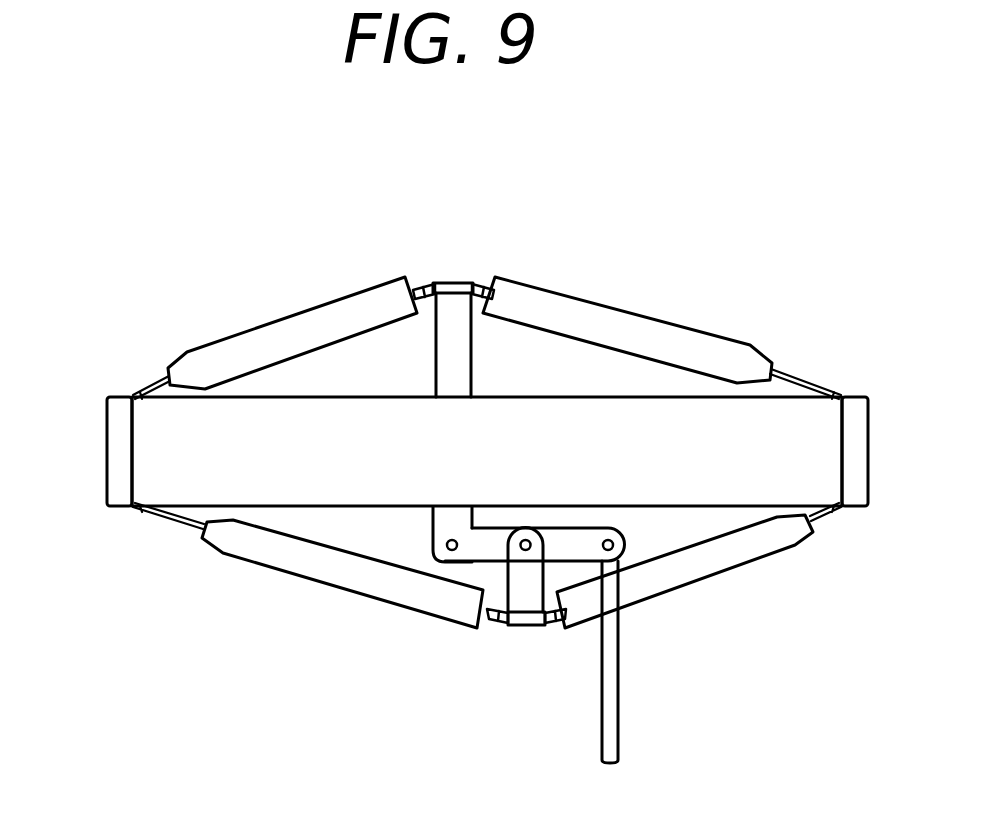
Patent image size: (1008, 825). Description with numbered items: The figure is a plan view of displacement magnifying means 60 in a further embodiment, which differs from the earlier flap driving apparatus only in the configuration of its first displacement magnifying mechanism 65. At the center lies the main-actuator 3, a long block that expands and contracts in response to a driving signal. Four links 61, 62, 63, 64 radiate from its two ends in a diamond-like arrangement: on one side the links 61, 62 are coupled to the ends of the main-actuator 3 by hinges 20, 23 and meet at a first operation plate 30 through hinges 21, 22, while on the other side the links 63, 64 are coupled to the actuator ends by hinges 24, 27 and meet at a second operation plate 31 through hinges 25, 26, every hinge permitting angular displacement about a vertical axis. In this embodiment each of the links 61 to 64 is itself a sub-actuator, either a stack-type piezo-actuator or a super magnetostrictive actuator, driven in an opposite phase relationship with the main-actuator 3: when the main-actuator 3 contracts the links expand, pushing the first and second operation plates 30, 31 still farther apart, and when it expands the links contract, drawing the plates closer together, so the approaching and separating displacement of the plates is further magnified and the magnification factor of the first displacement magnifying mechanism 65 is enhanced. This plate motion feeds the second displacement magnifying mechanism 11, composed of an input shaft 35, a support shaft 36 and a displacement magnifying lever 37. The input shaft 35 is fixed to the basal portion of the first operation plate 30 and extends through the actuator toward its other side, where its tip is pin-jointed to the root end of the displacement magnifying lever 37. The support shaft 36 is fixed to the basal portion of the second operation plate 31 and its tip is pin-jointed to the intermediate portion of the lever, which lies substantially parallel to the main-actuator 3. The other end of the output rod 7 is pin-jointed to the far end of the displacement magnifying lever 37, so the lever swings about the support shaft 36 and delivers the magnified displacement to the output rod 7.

The actuator 3 is at (783, 432).
The output rod 7 is at (613, 728).
The second displacement magnifying mechanism 11 is at (503, 573).
The hinge 20 is at (130, 395).
The hinge 21 is at (422, 283).
The hinge 22 is at (478, 283).
The hinge 23 is at (842, 392).
The hinge 24 is at (128, 508).
The hinge 25 is at (497, 628).
The hinge 26 is at (545, 626).
The hinge 27 is at (845, 513).
The first operation plate 30 is at (457, 283).
The second operation plate 31 is at (522, 625).
The input shaft 35 is at (452, 360).
The support shaft 36 is at (535, 590).
The displacement magnifying lever 37 is at (565, 540).
The displacement magnifying means 60 is at (102, 292).
The link 61 is at (315, 322).
The link 62 is at (635, 332).
The link 63 is at (300, 555).
The link 64 is at (710, 558).
The first displacement magnifying mechanism 65 is at (226, 334).